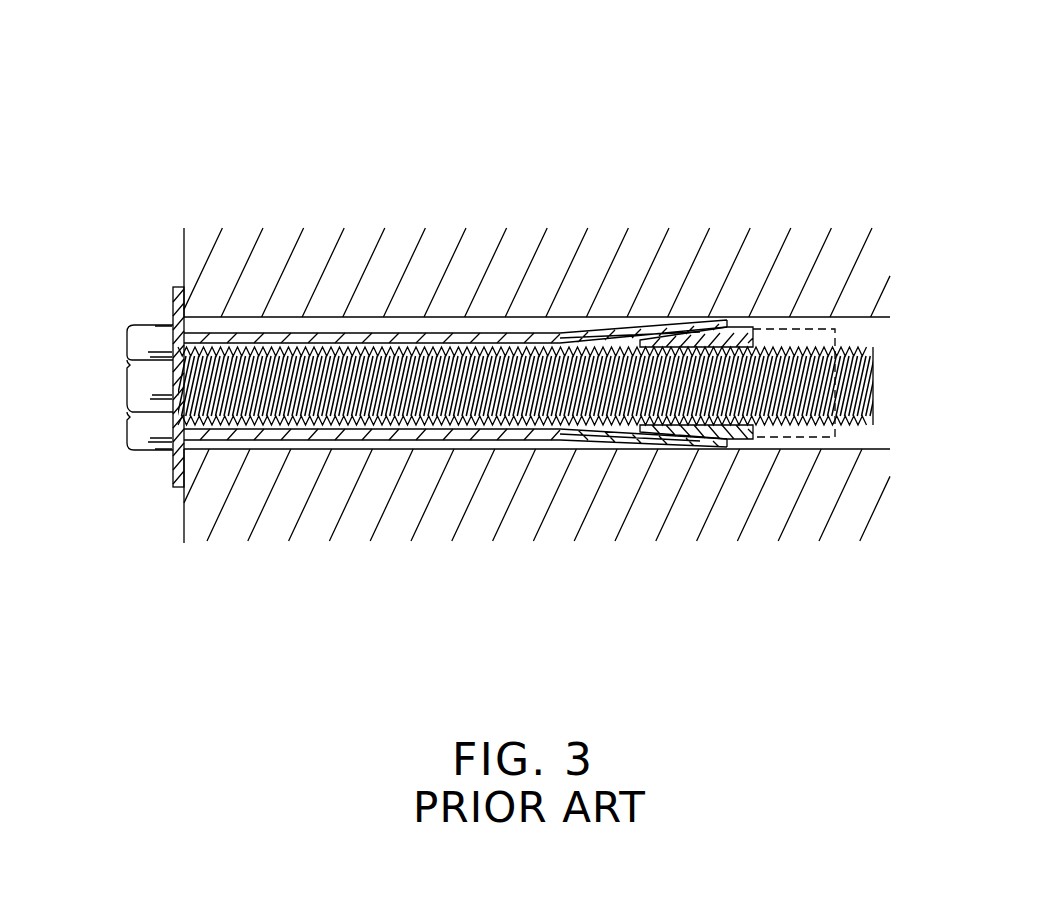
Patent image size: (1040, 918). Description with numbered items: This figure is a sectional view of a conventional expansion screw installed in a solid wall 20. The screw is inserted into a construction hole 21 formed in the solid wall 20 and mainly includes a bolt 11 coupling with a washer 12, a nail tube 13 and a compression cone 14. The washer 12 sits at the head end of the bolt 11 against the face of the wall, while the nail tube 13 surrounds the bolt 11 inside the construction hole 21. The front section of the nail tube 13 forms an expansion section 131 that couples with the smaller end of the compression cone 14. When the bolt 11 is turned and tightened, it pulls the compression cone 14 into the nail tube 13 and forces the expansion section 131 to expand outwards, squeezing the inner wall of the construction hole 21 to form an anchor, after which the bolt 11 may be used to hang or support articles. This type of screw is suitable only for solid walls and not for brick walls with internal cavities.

The bolt 11 is at (858, 365).
The washer 12 is at (173, 298).
The nail tube 13 is at (392, 338).
The expansion section 131 is at (655, 440).
The compression cone 14 is at (740, 437).
The solid wall 20 is at (377, 255).
The construction hole 21 is at (887, 428).